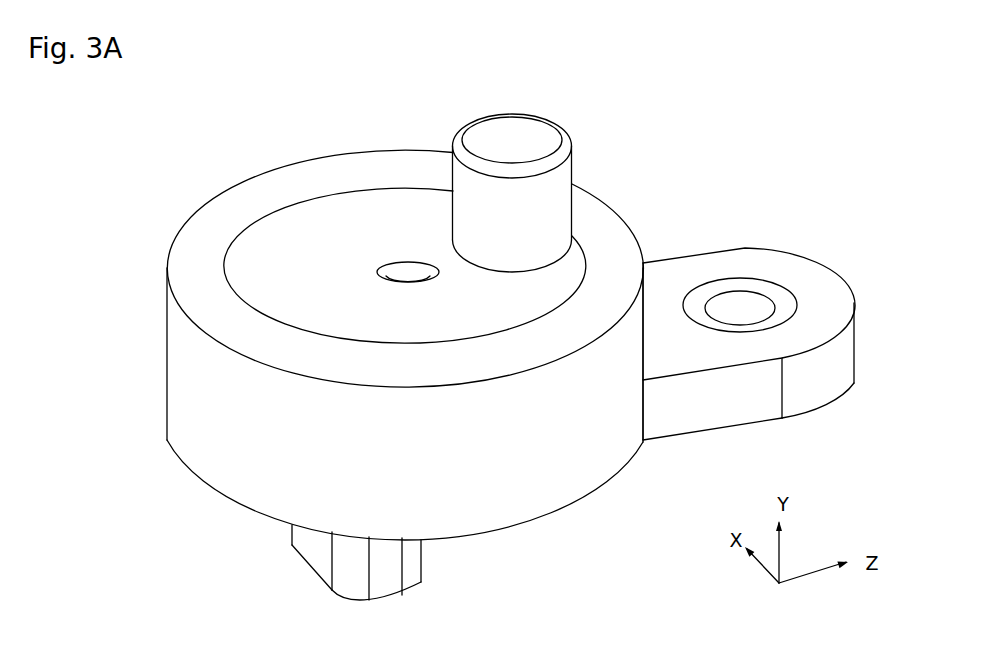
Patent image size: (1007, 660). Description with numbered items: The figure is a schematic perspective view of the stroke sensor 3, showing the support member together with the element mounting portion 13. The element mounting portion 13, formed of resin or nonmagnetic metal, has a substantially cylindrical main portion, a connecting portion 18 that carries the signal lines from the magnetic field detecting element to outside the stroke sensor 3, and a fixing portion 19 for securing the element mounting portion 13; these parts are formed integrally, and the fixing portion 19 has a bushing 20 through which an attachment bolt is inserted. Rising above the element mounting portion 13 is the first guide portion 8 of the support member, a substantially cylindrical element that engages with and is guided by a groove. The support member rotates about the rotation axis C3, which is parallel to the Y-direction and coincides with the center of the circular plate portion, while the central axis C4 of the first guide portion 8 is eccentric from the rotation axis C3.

The stroke sensor 3 is at (511, 321).
The first guide portion 8 is at (537, 142).
The element mounting portion 13 is at (575, 517).
The connecting portion 18 is at (413, 563).
The fixing portion 19 is at (749, 307).
The bushing 20 is at (766, 312).
The rotation axis C3 is at (405, 282).
The central axis C4 is at (512, 145).